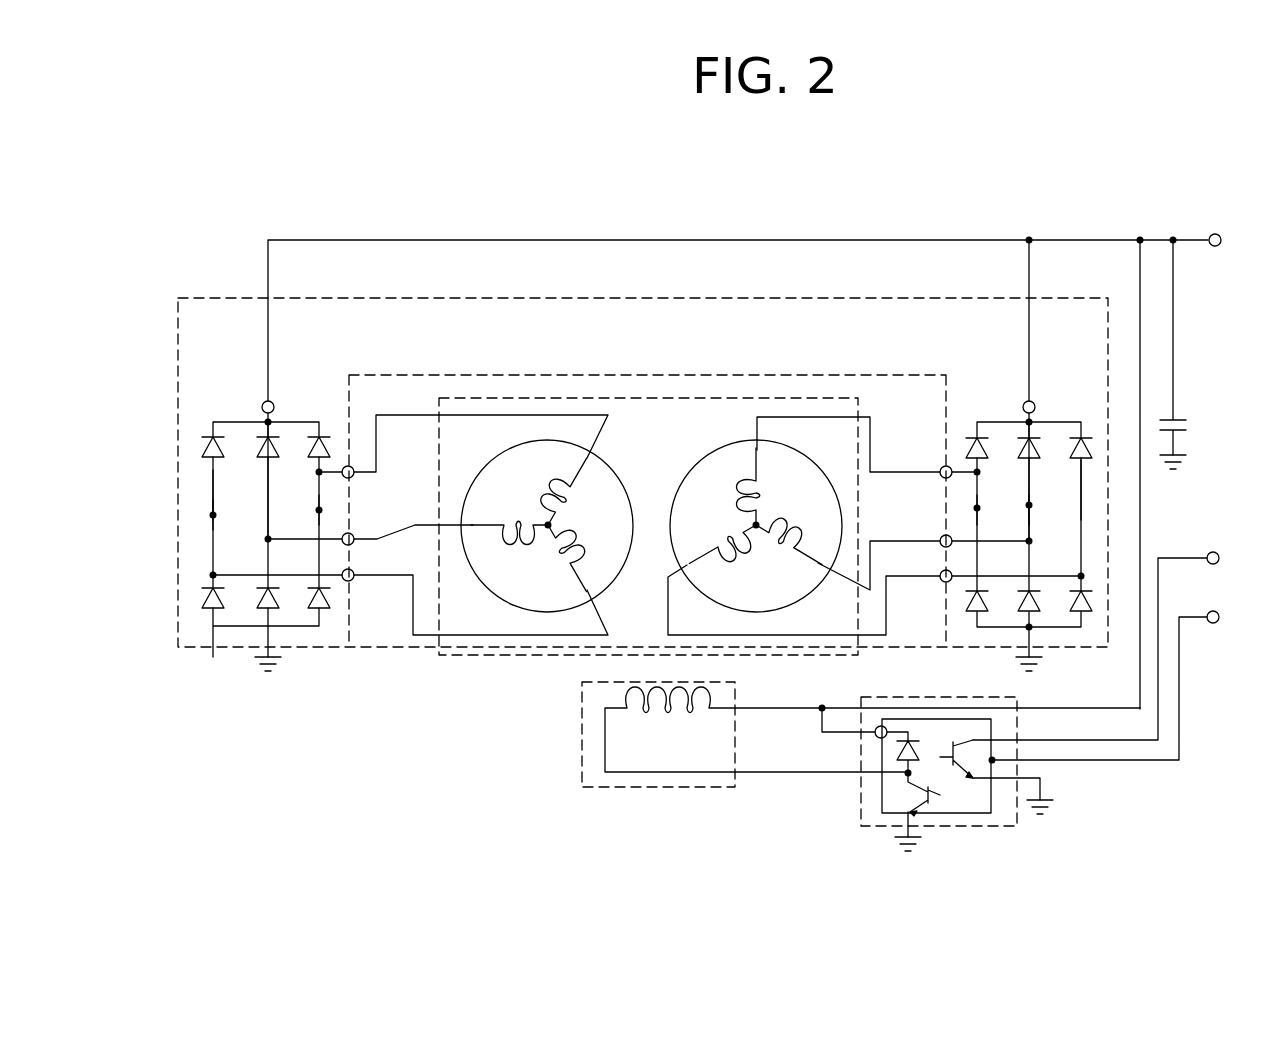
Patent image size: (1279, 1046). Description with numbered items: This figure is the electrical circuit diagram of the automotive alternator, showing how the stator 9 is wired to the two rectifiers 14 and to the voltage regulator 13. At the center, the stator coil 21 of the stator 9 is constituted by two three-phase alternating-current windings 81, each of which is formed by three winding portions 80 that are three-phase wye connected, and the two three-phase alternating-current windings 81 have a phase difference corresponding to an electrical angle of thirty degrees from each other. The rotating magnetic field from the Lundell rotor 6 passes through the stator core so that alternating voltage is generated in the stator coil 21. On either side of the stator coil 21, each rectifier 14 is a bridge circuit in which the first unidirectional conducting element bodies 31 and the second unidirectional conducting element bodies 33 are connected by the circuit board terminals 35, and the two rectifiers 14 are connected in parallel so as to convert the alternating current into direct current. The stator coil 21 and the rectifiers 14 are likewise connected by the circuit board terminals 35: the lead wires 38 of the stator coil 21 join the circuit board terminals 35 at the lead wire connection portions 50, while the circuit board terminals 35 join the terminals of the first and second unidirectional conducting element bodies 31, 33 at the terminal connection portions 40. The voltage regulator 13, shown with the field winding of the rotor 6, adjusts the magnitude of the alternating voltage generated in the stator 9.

The Lundell rotor 6 is at (610, 788).
The stator 9 is at (485, 658).
The voltage regulator 13 is at (980, 826).
The rectifiers 14 is at (207, 548).
The stator coil 21 is at (627, 458).
The first unidirectional conducting element bodies 31 is at (250, 445).
The second unidirectional conducting element bodies 33 is at (213, 612).
The circuit board terminals 35 is at (213, 482).
The lead wires 38 is at (938, 472).
The terminal connection portions 40 is at (213, 515).
The lead wire connection portions 50 is at (268, 539).
The winding portions 80 is at (578, 490).
The three-phase alternating-current windings 81 is at (549, 452).